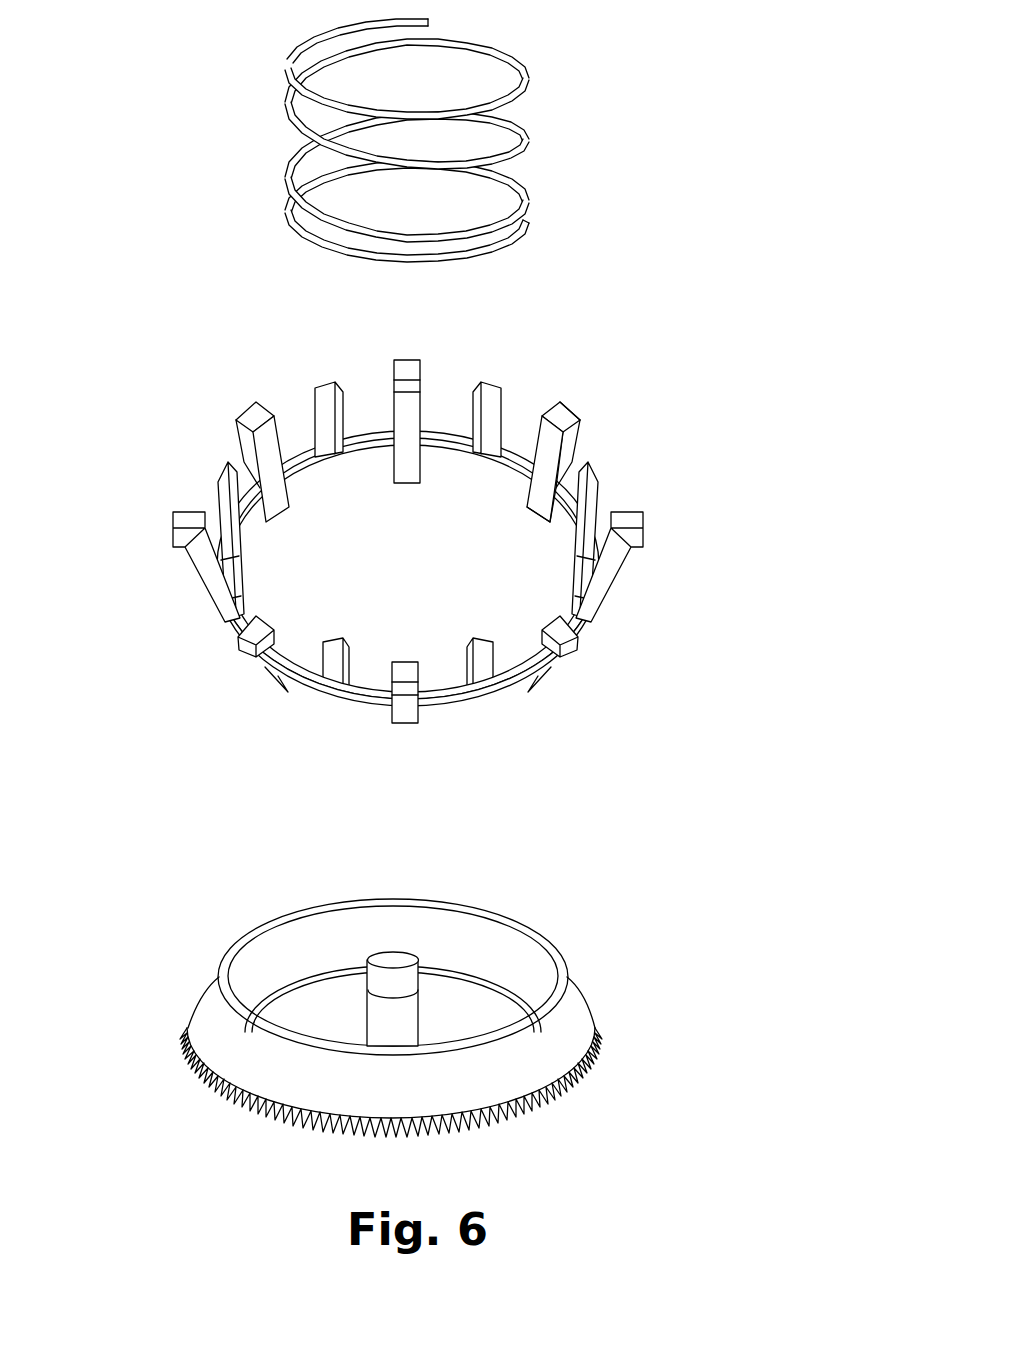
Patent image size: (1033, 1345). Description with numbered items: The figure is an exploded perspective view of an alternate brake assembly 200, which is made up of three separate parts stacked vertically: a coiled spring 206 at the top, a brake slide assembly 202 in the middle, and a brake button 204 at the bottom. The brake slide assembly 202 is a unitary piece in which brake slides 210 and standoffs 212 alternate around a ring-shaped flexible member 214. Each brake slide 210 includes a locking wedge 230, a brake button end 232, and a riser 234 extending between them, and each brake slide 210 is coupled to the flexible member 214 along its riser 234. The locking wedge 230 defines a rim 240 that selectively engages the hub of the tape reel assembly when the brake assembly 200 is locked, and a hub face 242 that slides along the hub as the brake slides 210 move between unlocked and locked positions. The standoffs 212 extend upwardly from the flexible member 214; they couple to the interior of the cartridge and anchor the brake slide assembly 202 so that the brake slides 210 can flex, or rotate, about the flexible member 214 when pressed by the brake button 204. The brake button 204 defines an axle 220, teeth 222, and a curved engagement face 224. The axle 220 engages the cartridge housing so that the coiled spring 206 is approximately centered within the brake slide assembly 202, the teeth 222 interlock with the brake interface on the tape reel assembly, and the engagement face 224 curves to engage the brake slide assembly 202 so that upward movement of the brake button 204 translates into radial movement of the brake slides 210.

The brake assembly 200 is at (130, 15).
The brake slide assembly 202 is at (479, 538).
The brake button 204 is at (431, 993).
The coiled spring 206 is at (531, 132).
The brake slides 210 is at (556, 525).
The standoffs 212 is at (335, 678).
The flexible member 214 is at (445, 425).
The axle 220 is at (393, 958).
The teeth 222 is at (569, 1085).
The curved engagement face 224 is at (571, 1016).
The locking wedge 230 is at (631, 414).
The brake button end 232 is at (536, 524).
The riser 234 is at (542, 487).
The rim 240 is at (578, 443).
The hub face 242 is at (582, 427).